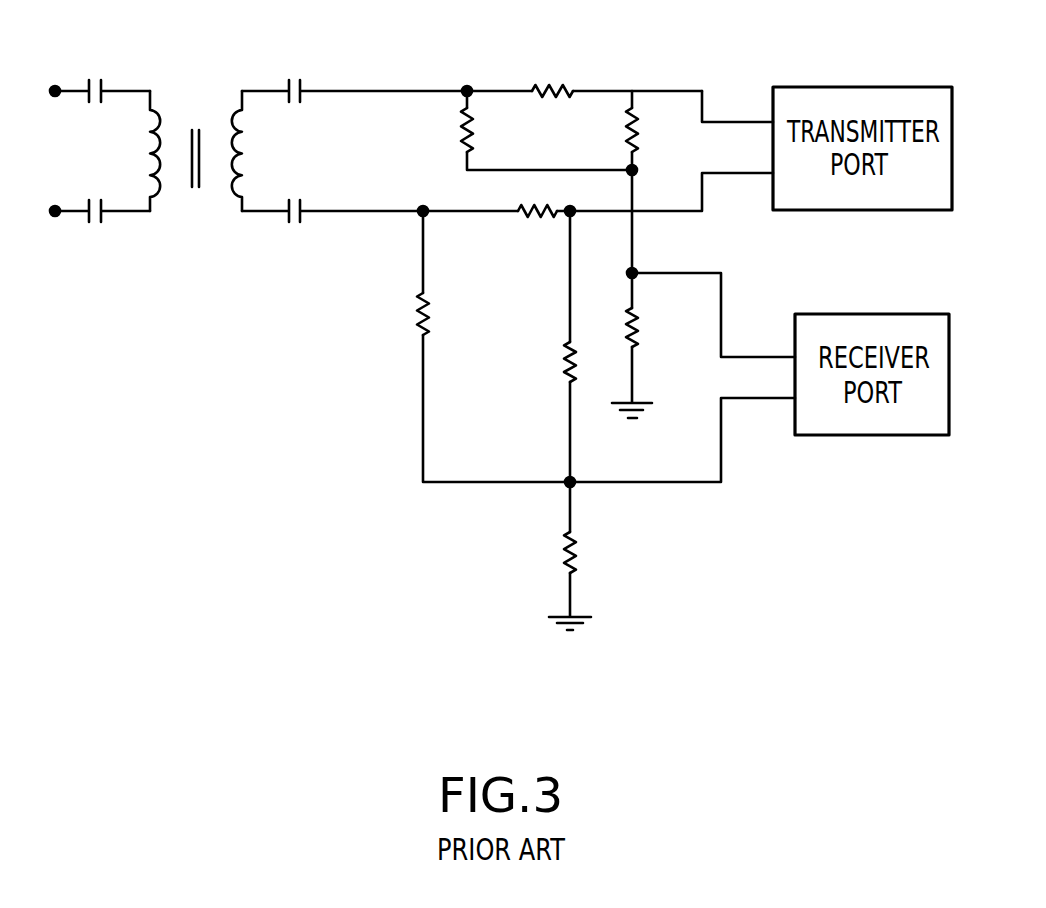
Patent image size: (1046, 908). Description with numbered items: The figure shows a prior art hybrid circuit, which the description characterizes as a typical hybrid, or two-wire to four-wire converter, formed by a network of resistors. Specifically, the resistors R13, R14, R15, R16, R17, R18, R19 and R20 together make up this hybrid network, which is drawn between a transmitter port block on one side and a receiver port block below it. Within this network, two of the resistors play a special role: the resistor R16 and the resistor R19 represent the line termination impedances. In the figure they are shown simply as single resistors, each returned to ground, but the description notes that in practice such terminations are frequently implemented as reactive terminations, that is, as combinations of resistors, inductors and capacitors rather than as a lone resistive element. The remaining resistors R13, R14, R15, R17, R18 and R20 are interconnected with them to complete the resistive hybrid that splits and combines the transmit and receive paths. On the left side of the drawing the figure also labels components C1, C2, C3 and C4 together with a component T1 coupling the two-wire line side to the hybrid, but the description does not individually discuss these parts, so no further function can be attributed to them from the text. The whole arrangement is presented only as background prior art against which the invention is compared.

The capacitor C1 is at (354, 68).
The capacitor C2 is at (102, 68).
The capacitor C3 is at (102, 231).
The capacitor C4 is at (332, 231).
The transformer T1 is at (214, 151).
The resistor R13 is at (658, 182).
The resistor R14 is at (584, 67).
The resistor R15 is at (598, 214).
The line termination impedance resistor R16 is at (652, 345).
The resistor R17 is at (546, 130).
The resistor R18 is at (542, 346).
The line termination impedance resistor R19 is at (593, 556).
The resistor R20 is at (493, 346).